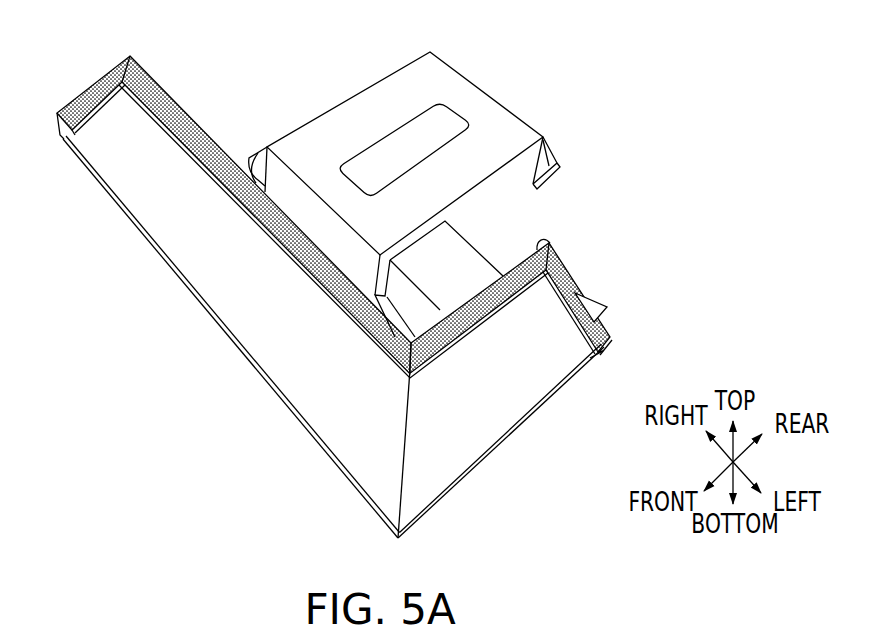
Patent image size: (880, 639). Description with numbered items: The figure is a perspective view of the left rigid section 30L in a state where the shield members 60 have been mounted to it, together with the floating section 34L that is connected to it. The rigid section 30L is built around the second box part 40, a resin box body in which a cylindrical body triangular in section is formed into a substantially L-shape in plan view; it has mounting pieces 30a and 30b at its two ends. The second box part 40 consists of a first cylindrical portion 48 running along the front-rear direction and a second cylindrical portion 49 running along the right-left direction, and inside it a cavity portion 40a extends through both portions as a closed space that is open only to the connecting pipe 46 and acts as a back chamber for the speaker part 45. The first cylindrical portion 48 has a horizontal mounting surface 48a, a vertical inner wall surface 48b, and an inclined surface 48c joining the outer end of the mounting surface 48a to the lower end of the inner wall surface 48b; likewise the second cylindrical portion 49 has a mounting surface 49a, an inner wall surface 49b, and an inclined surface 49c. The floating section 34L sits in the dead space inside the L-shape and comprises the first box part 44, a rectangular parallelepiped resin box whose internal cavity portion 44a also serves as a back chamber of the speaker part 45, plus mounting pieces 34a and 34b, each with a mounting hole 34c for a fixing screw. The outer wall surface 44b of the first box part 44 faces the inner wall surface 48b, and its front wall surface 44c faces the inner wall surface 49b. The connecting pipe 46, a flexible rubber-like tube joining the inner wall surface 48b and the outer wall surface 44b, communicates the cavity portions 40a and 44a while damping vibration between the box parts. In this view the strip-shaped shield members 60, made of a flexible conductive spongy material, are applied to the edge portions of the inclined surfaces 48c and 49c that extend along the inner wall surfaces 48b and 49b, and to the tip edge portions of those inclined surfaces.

The rigid section 30L is at (355, 276).
The mounting piece 30a is at (607, 307).
The mounting piece 30b is at (68, 113).
The floating section 34L is at (412, 175).
The mounting piece 34a is at (547, 158).
The mounting piece 34b is at (249, 157).
The mounting hole 34c is at (254, 157).
The second box part 40 is at (350, 285).
The cavity portion 40a is at (287, 347).
The first box part 44 is at (412, 175).
The cavity portion 44a is at (338, 137).
The outer wall surface 44b is at (500, 200).
The front wall surface 44c is at (293, 210).
The speaker part 45 is at (403, 143).
The connecting pipe 46 is at (460, 268).
The first cylindrical portion 48 is at (457, 384).
The mounting surface 48a is at (541, 410).
The inner wall surface 48b is at (552, 239).
The inclined surface 48c is at (482, 423).
The second cylindrical portion 49 is at (302, 282).
The mounting surface 49a is at (217, 330).
The inner wall surface 49b is at (167, 90).
The inclined surface 49c is at (337, 430).
The shield member 60 is at (130, 57).